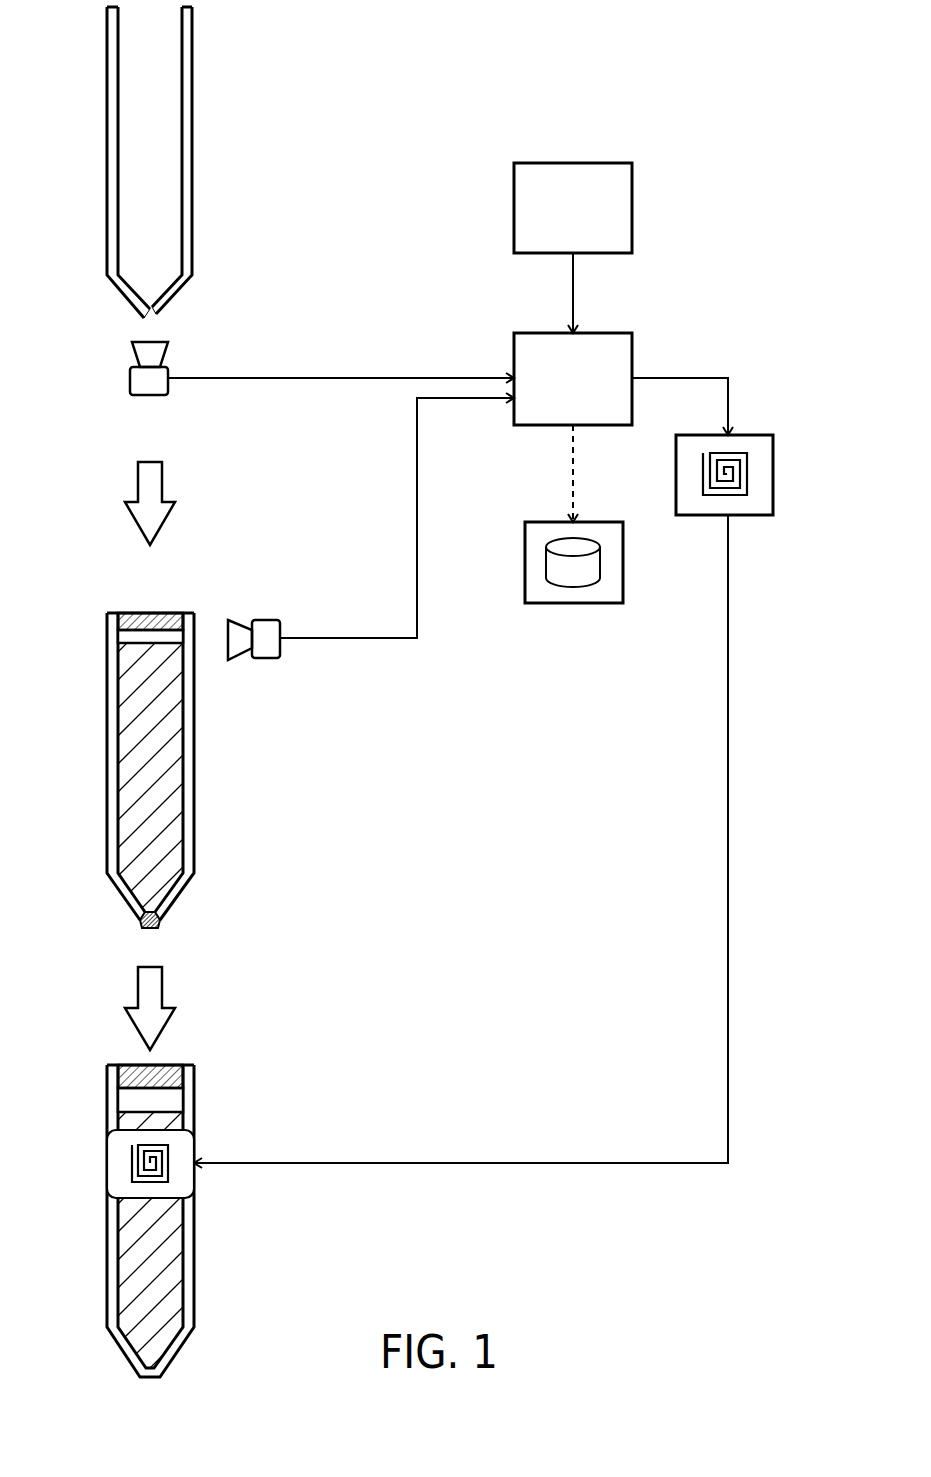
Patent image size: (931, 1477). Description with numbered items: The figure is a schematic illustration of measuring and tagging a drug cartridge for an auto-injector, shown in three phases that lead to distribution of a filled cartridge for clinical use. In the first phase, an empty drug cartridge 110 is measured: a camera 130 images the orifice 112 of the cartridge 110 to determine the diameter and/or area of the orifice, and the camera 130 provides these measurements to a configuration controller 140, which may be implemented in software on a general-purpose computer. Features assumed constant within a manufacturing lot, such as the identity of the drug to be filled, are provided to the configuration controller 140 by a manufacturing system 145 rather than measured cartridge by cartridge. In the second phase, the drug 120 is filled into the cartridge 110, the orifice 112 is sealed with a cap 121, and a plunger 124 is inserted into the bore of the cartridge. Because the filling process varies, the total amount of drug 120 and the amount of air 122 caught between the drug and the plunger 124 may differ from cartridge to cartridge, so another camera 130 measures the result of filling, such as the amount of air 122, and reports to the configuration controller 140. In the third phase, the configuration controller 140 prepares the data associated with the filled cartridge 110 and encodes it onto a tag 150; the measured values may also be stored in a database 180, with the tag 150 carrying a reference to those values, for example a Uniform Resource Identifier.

The drug cartridge 110 is at (196, 137).
The orifice 112 is at (148, 318).
The drug 120 is at (140, 795).
The cap 121 is at (155, 927).
The air 122 is at (118, 634).
The plunger 124 is at (150, 613).
The camera 130 is at (168, 392).
The configuration controller 140 is at (632, 352).
The manufacturing system 145 is at (632, 212).
The tag 150 is at (773, 476).
The database 180 is at (560, 603).